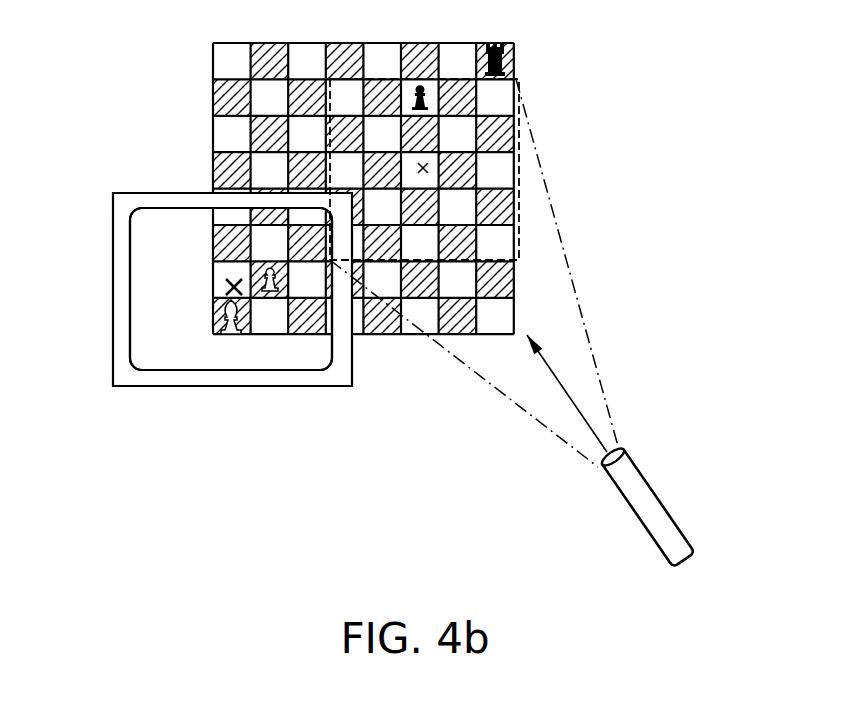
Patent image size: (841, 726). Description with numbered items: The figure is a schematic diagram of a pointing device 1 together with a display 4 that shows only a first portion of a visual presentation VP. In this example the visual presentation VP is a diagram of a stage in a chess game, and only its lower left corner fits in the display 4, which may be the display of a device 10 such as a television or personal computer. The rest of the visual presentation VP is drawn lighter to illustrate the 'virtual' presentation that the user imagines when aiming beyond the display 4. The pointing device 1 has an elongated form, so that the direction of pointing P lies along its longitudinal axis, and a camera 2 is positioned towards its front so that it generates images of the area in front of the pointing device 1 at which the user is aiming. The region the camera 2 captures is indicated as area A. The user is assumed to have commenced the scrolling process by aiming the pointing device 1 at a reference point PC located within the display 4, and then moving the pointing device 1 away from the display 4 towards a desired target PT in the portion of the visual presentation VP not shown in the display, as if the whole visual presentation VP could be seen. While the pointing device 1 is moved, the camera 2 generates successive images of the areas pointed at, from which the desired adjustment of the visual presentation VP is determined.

The pointing device 1 is at (684, 536).
The camera 2 is at (626, 453).
The display 4 is at (153, 282).
The device 10 is at (113, 357).
The captured image area of the chessboard A is at (521, 116).
The direction of pointing P is at (592, 433).
The desired target PT is at (426, 166).
The reference point PC is at (238, 332).
The visual presentation VP is at (310, 332).